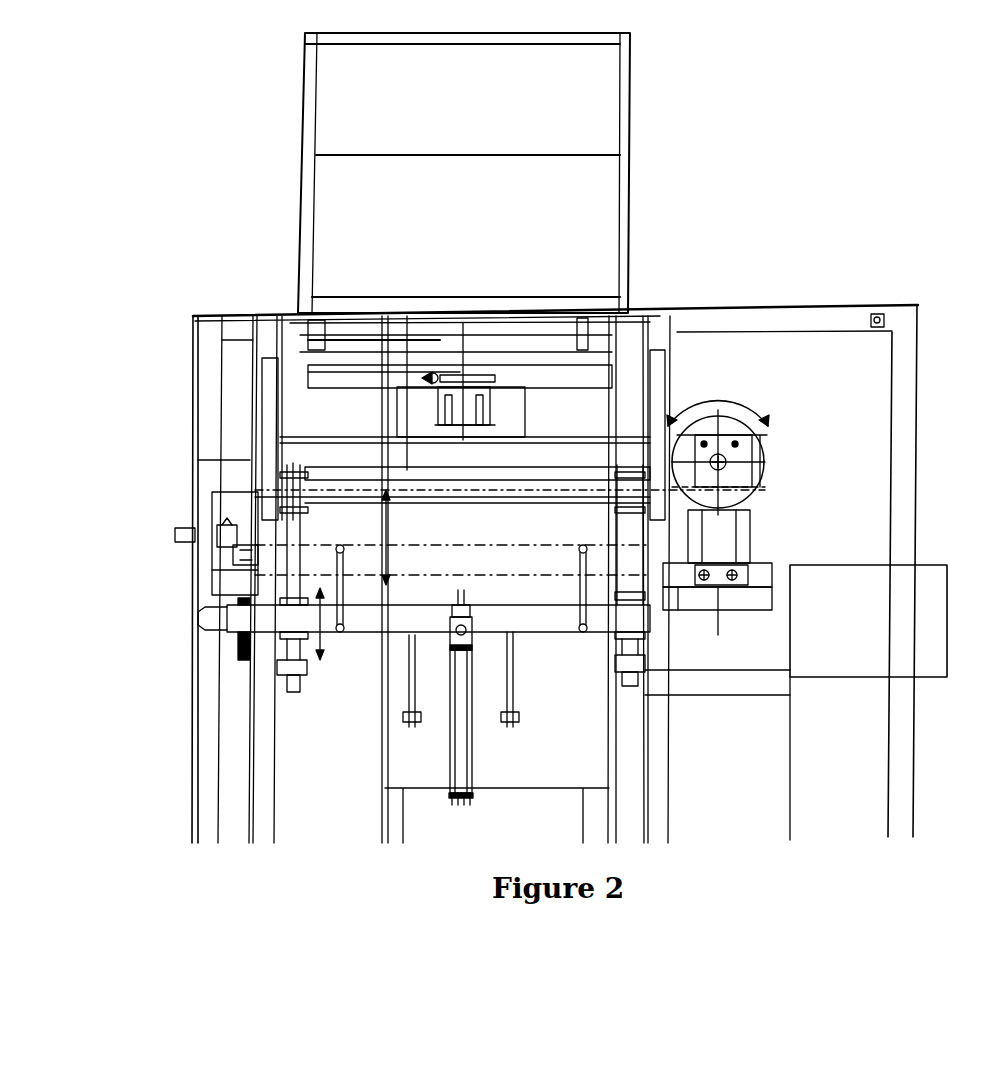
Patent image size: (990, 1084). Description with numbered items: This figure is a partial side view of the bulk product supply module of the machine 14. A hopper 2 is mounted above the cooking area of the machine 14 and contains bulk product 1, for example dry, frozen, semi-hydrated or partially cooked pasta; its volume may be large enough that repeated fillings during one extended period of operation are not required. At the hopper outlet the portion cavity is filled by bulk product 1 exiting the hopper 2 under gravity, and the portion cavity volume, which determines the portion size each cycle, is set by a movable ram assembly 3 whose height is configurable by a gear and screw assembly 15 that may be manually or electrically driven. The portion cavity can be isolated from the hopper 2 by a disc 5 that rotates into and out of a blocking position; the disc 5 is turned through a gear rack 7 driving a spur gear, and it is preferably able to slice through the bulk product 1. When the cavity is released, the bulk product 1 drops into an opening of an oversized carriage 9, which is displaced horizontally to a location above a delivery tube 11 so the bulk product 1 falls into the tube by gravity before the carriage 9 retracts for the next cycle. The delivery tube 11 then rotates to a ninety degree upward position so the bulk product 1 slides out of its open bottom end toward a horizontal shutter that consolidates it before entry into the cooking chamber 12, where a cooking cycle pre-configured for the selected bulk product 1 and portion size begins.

The bulk product 1 is at (481, 244).
The hopper 2 is at (630, 190).
The ram assembly 3 is at (615, 365).
The disc 5 is at (355, 335).
The gear rack 7 is at (472, 680).
The carriage 9 is at (295, 415).
The delivery tube 11 is at (730, 435).
The cooking chamber 12 is at (790, 716).
The machine 14 is at (192, 322).
The gear and screw assembly 15 is at (197, 568).